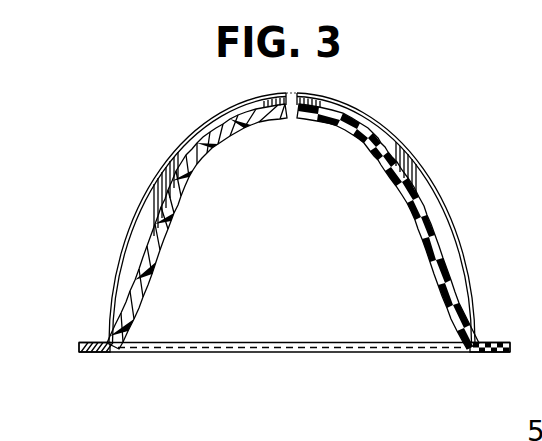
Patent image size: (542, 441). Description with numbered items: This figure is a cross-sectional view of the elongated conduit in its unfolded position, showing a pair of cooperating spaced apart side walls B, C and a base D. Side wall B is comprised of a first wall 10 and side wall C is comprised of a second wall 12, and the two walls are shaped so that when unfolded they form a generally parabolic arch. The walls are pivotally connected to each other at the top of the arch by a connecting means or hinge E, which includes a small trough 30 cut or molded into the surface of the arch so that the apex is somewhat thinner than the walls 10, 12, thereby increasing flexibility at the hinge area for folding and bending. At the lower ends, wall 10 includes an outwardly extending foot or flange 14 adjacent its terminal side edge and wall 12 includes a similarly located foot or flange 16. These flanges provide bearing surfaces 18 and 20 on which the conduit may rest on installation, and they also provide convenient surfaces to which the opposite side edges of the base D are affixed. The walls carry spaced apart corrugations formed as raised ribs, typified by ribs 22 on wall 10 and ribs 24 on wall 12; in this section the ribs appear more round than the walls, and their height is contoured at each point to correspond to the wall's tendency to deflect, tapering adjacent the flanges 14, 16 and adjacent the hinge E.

The first wall 10 is at (150, 255).
The second wall 12 is at (432, 245).
The foot or flange 14 is at (103, 343).
The foot or flange 16 is at (486, 340).
The bearing surface 18 is at (97, 363).
The bearing surface 20 is at (487, 361).
The ribs 22 is at (156, 164).
The ribs 24 is at (432, 157).
The trough 30 is at (293, 112).
The side wall B is at (130, 234).
The side wall C is at (469, 226).
The base D is at (318, 362).
The hinge E is at (302, 88).